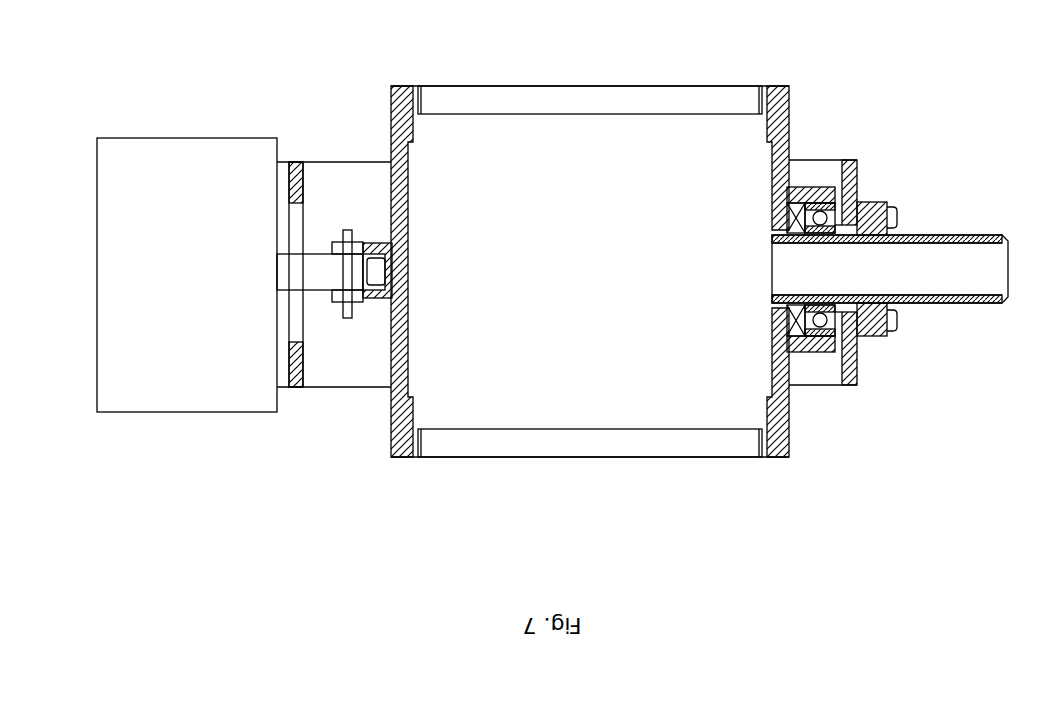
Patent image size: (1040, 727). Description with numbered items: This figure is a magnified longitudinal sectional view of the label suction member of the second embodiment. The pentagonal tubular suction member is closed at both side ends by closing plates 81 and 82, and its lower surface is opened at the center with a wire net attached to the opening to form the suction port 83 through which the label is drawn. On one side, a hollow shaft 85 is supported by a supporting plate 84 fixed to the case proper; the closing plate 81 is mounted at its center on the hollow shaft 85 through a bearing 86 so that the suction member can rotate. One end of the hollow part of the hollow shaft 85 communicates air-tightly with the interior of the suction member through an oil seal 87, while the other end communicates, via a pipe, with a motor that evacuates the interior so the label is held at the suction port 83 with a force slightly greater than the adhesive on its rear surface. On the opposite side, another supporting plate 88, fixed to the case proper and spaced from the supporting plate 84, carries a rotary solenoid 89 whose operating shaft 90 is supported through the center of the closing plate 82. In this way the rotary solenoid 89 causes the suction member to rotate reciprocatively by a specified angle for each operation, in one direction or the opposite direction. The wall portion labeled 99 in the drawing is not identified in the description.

The closing plate 81 is at (785, 430).
The closing plate 82 is at (398, 437).
The suction port 83 is at (502, 97).
The supporting plate 84 is at (860, 168).
The hollow shaft 85 is at (950, 303).
The bearing 86 is at (825, 353).
The oil seal 87 is at (802, 190).
The supporting plate 88 is at (298, 162).
The rotary solenoid 89 is at (178, 400).
The operating shaft 90 is at (293, 275).
The cylindrical housing wall 99 is at (584, 404).